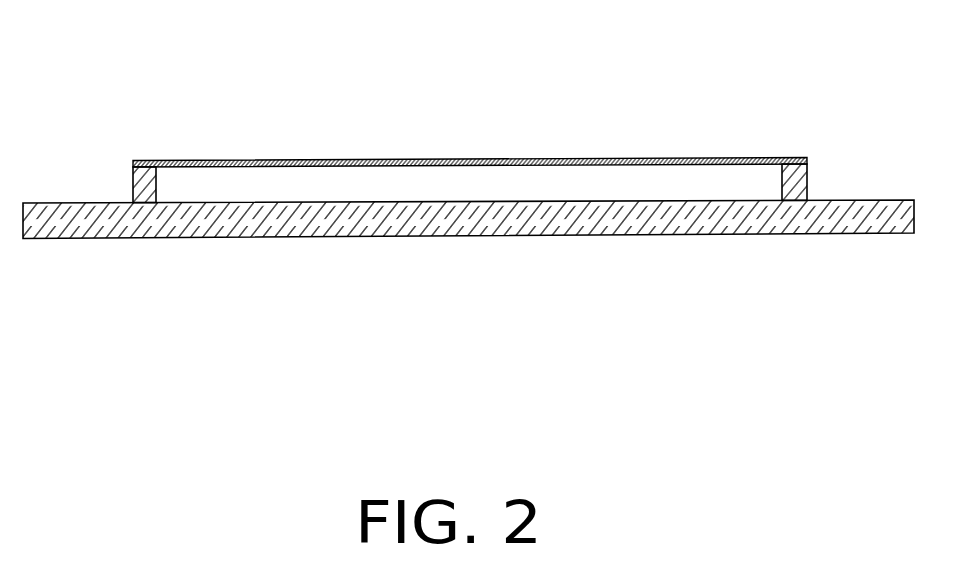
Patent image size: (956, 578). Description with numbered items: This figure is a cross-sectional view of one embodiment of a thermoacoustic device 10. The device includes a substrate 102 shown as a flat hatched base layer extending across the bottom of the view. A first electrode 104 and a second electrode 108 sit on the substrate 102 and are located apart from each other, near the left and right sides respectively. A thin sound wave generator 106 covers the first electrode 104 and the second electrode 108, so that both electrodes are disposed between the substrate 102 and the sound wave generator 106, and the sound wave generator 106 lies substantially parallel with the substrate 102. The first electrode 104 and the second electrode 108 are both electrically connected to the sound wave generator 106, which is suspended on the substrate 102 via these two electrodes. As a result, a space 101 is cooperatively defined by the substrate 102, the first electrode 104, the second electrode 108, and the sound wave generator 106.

The thermoacoustic device 10 is at (575, 66).
The space 101 is at (273, 180).
The substrate 102 is at (320, 222).
The first electrode 104 is at (133, 186).
The sound wave generator 106 is at (398, 160).
The second electrode 108 is at (797, 187).